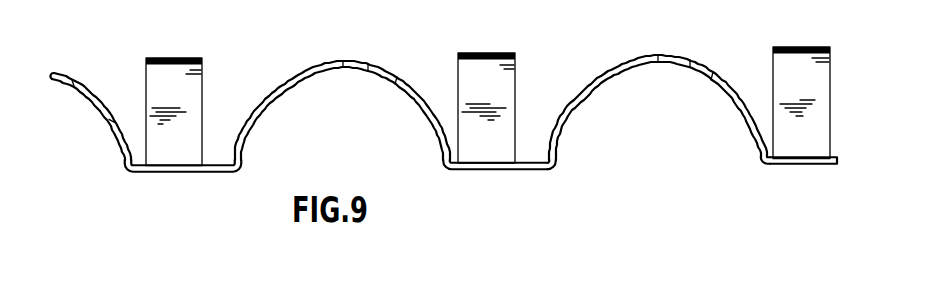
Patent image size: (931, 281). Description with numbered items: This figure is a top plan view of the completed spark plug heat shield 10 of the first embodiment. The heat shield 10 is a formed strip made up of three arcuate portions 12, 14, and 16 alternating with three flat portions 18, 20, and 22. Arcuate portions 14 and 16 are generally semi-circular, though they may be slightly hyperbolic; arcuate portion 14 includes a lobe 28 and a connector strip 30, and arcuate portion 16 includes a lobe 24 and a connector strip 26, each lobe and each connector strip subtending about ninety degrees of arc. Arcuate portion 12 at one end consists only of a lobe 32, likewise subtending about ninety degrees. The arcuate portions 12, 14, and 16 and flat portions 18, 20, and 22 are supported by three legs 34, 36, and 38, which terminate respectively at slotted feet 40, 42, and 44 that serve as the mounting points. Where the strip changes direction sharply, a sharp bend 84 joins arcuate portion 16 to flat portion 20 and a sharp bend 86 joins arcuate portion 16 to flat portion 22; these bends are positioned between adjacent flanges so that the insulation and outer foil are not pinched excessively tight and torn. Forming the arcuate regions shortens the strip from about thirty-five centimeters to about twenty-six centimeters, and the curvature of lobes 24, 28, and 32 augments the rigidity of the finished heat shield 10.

The spark plug heat shield 10 is at (146, 204).
The arcuate portion 12 is at (99, 82).
The arcuate portion 14 is at (308, 49).
The arcuate portion 16 is at (623, 44).
The flat portion 18 is at (210, 172).
The flat portion 20 is at (520, 170).
The flat portion 22 is at (805, 164).
The lobe 24 is at (740, 94).
The connector strip 26 is at (583, 98).
The lobe 28 is at (412, 82).
The connector strip 30 is at (259, 107).
The lobe 32 is at (112, 122).
The leg 34 is at (822, 110).
The leg 36 is at (501, 113).
The leg 38 is at (191, 117).
The slotted foot 40 is at (787, 48).
The slotted foot 42 is at (492, 54).
The slotted foot 44 is at (186, 59).
The sharp bend 84 is at (557, 168).
The sharp bend 86 is at (761, 165).